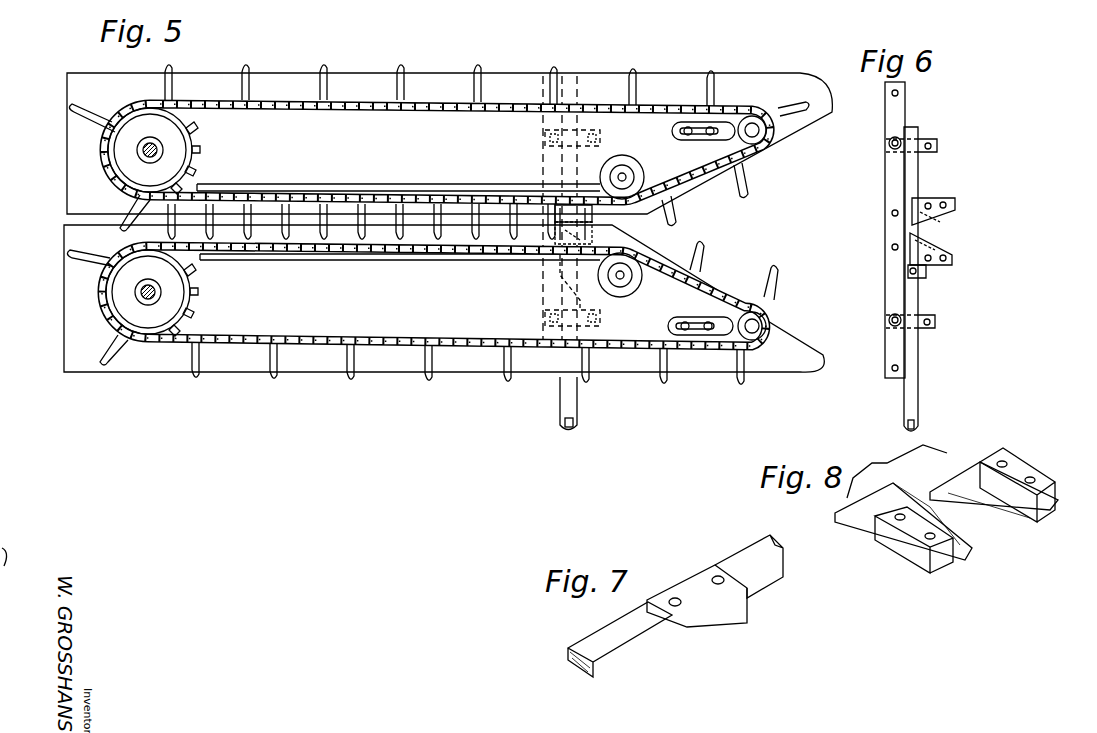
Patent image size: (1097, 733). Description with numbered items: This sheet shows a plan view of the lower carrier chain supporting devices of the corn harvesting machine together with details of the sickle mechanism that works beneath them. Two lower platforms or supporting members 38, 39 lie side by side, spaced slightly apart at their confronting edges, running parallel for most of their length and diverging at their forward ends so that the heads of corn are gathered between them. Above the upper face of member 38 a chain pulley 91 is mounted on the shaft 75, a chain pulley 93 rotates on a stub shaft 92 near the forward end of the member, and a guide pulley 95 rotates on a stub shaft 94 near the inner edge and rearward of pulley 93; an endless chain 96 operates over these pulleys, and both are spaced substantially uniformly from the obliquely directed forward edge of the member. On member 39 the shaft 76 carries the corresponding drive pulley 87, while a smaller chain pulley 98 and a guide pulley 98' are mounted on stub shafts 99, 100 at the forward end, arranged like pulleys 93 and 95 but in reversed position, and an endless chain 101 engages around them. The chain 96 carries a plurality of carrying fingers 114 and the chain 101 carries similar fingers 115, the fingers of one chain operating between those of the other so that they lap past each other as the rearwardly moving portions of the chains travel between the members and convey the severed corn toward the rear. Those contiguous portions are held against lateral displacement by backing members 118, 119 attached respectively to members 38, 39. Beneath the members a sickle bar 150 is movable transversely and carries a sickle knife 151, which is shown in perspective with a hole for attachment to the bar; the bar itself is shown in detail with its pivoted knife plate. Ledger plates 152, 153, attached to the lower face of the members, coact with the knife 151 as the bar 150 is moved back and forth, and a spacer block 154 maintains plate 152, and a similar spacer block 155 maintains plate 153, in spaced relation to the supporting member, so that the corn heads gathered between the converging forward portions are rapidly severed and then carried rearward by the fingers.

In FIG. 5, the lower supporting member 38 is at (478, 372).
In FIG. 5, the lower supporting member 39 is at (511, 73).
In FIG. 5, the shaft 75 is at (151, 287).
In FIG. 5, the shaft 76 is at (153, 145).
In FIG. 5, the upper drive sprocket 87 is at (180, 137).
In FIG. 5, the chain pulley 91 is at (178, 284).
In FIG. 5, the stub shaft 92 is at (756, 322).
In FIG. 5, the chain pulley 93 is at (736, 314).
In FIG. 5, the stub shaft 94 is at (626, 279).
In FIG. 5, the guide pulley 95 is at (620, 292).
In FIG. 5, the endless chain 96 is at (434, 257).
In FIG. 5, the chain pulley 98 is at (703, 140).
In FIG. 5, the guide pulley 98' is at (622, 168).
In FIG. 5, the stub shaft 99 is at (752, 126).
In FIG. 5, the stub shaft 100 is at (626, 176).
In FIG. 5, the endless chain 101 is at (418, 108).
In FIG. 5, the carrying fingers 114 is at (352, 375).
In FIG. 5, the fingers 115 is at (401, 68).
In FIG. 5, the backing member 118 is at (304, 257).
In FIG. 5, the backing member 119 is at (300, 192).
In FIG. 5, the sickle bar 150 is at (578, 150).
In FIG. 6, the sickle bar 150 is at (912, 364).
In FIG. 7, the sickle bar 150 is at (742, 570).
In FIG. 5, the sickle knife 151 is at (578, 282).
In FIG. 6, the sickle knife 151 is at (923, 274).
In FIG. 7, the sickle knife 151 is at (736, 614).
In FIG. 5, the ledger plate 152 is at (588, 234).
In FIG. 6, the ledger plate 152 is at (930, 243).
In FIG. 8, the ledger plate 152 is at (862, 527).
In FIG. 5, the ledger plate 153 is at (586, 212).
In FIG. 6, the ledger plate 153 is at (926, 220).
In FIG. 8, the ledger plate 153 is at (962, 480).
In FIG. 8, the spacer block 154 is at (903, 545).
In FIG. 8, the spacer block 155 is at (1022, 468).